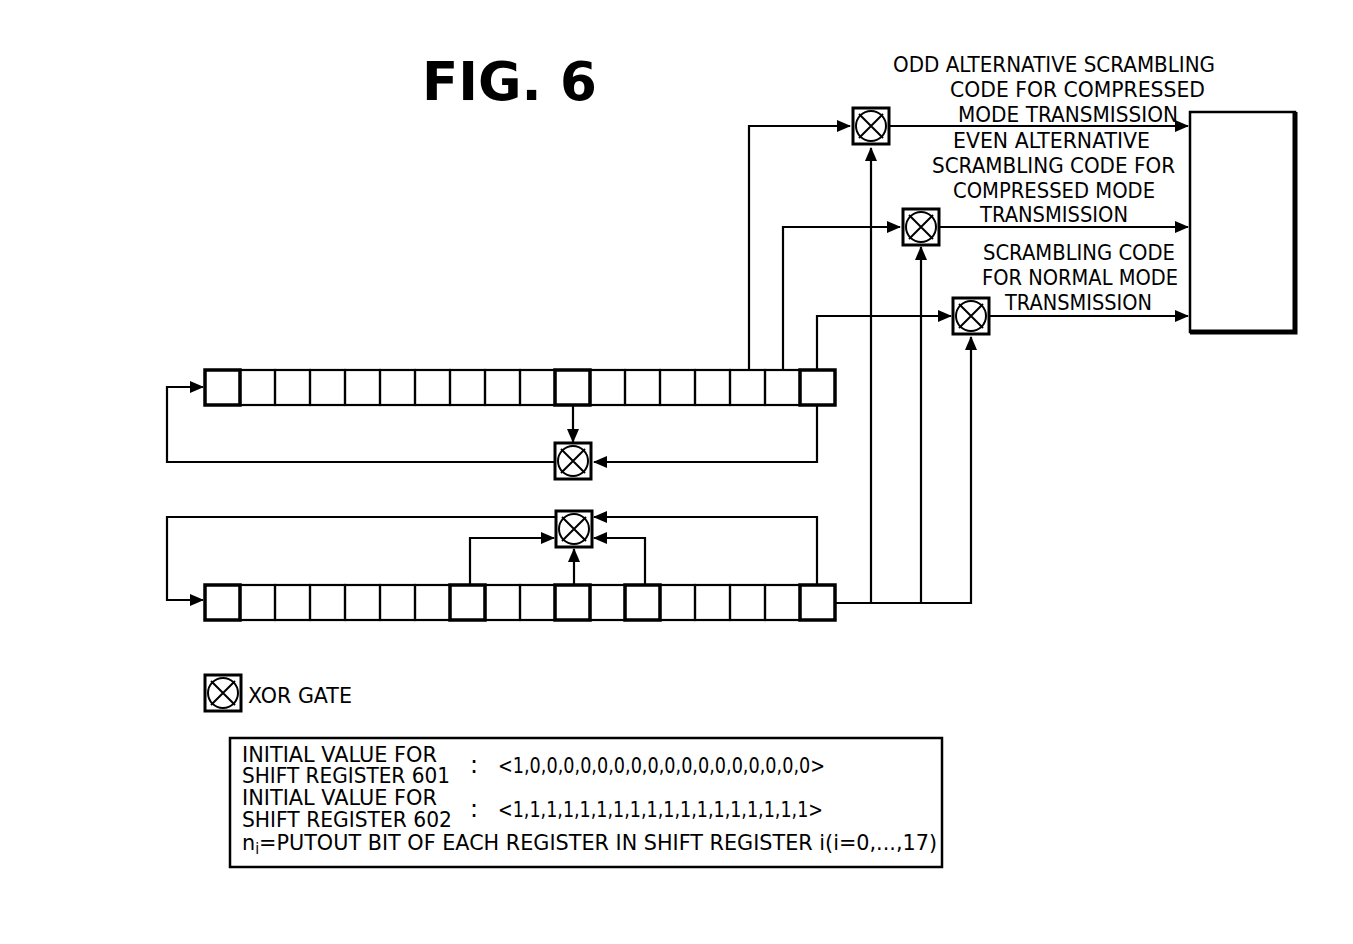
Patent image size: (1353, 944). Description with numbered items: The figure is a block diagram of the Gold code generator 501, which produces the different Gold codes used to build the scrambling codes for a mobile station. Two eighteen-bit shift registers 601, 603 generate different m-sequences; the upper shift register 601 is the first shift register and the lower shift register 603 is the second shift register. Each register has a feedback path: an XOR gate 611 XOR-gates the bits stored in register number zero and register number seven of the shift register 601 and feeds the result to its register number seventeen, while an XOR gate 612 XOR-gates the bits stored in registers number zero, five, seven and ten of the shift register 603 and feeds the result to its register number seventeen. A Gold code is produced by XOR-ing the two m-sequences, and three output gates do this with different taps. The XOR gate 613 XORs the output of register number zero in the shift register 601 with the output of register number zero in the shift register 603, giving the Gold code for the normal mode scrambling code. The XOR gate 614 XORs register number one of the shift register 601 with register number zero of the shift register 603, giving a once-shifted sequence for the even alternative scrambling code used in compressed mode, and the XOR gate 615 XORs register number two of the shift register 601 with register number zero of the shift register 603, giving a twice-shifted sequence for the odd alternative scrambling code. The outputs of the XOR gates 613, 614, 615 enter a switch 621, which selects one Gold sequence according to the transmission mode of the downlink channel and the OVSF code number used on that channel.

The Gold code generator 501 is at (760, 105).
The shift register 601 is at (205, 372).
The shift register 603 is at (205, 615).
The XOR gate 611 is at (592, 446).
The XOR gate 612 is at (556, 513).
The XOR gate 613 is at (964, 298).
The XOR gate 614 is at (912, 209).
The XOR gate 615 is at (867, 108).
The switch 621 is at (1240, 111).